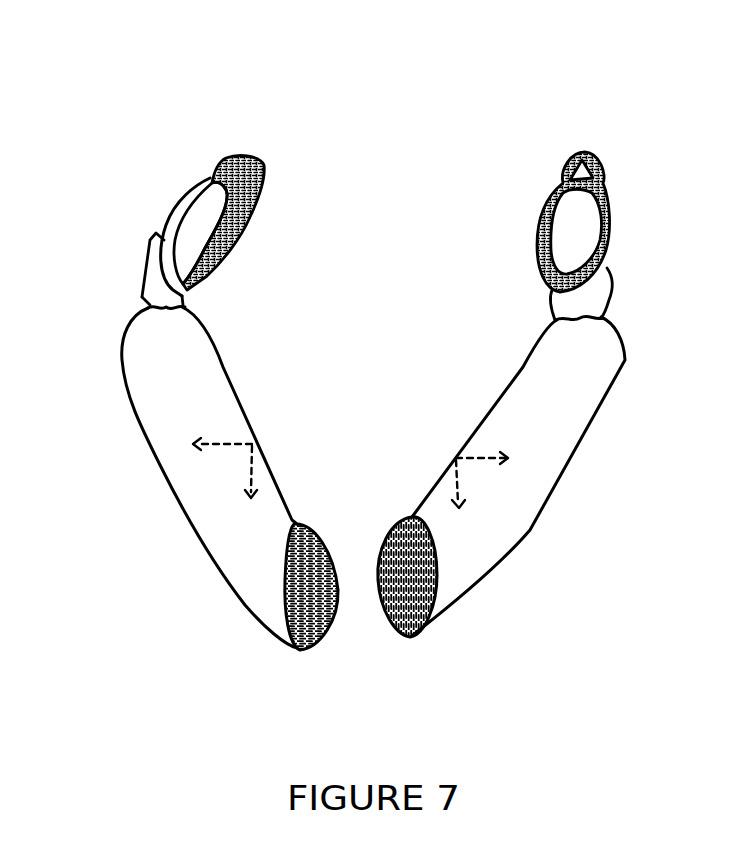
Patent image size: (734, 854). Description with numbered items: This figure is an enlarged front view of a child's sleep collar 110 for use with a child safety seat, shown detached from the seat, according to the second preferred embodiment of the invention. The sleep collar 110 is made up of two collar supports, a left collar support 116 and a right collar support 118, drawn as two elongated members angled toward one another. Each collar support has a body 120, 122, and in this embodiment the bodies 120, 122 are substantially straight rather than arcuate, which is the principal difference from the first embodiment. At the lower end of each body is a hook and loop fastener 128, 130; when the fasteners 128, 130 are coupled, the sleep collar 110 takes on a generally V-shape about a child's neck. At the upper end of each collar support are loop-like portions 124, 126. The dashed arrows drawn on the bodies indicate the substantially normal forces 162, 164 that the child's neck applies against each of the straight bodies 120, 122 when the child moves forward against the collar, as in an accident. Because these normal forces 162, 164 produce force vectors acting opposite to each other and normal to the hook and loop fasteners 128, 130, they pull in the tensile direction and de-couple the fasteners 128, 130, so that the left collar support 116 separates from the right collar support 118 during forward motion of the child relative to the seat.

The child's sleep collar 110 is at (322, 233).
The left collar support 116 is at (571, 392).
The right collar support 118 is at (130, 378).
The body 120 is at (517, 505).
The body 122 is at (212, 495).
The right retaining loop 124 is at (605, 182).
The left retaining loop 126 is at (183, 188).
The hook and loop fastener 128 is at (393, 633).
The hook and loop fastener 130 is at (315, 648).
The normal force 162 is at (447, 453).
The normal force 164 is at (262, 441).